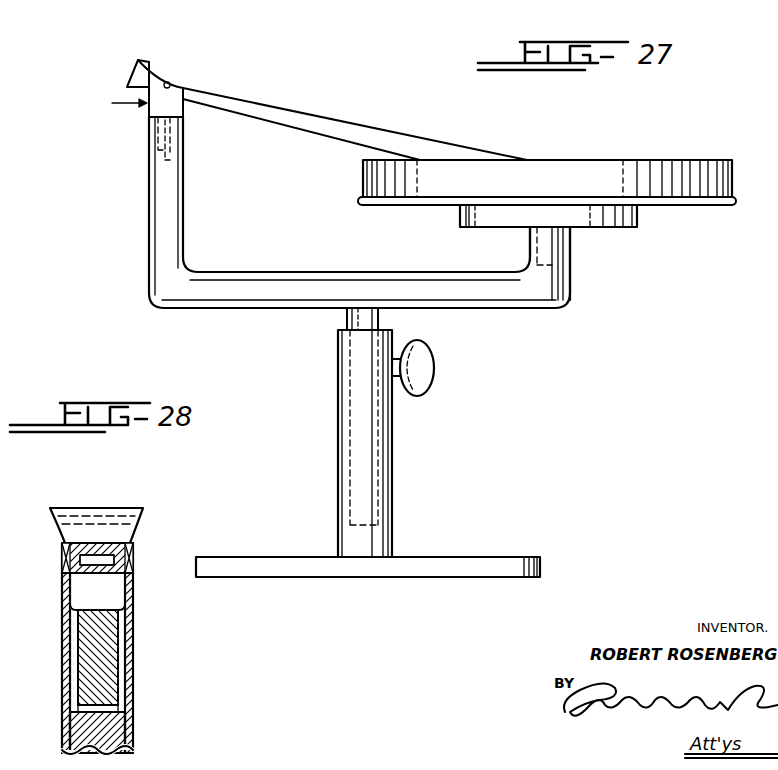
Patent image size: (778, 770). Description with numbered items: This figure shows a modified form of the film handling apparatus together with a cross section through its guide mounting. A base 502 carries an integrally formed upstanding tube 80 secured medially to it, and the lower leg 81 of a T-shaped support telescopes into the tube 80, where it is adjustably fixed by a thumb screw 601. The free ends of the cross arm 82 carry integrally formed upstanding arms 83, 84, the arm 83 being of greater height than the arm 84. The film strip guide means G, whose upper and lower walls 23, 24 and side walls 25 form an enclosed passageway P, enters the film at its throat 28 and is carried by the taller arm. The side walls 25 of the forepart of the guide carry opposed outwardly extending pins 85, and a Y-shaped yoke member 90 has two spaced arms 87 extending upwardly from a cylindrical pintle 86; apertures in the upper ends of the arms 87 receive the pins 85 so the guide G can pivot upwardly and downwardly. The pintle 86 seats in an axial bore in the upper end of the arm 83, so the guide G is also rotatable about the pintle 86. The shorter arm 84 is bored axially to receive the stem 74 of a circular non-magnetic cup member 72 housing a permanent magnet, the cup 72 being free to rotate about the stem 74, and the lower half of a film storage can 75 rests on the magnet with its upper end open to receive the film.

In FIG. 27, the throat 28 is at (128, 39).
In FIG. 27, the pins 85 is at (171, 83).
In FIG. 28, the pins 85 is at (66, 549).
In FIG. 27, the yoke member 90 is at (115, 105).
In FIG. 28, the yoke member 90 is at (138, 602).
In FIG. 27, the pintle 86 is at (162, 148).
In FIG. 28, the pintle 86 is at (100, 698).
In FIG. 27, the upstanding arm 83 is at (160, 192).
In FIG. 28, the upstanding arm 83 is at (62, 690).
In FIG. 27, the cross arm 82 is at (280, 287).
In FIG. 27, the lower leg 81 is at (347, 320).
In FIG. 27, the film storage can 75 is at (362, 176).
In FIG. 27, the cup member 72 is at (628, 228).
In FIG. 27, the stem 74 is at (548, 249).
In FIG. 27, the upstanding arm 84 is at (566, 250).
In FIG. 27, the thumb screw 601 is at (421, 368).
In FIG. 27, the tube 80 is at (393, 462).
In FIG. 27, the base 502 is at (497, 560).
In FIG. 27, the film strip guide means G is at (323, 118).
In FIG. 28, the film strip guide means G is at (112, 505).
In FIG. 28, the passageway P is at (96, 511).
In FIG. 28, the upper wall 23 is at (113, 546).
In FIG. 28, the side walls 25 is at (70, 582).
In FIG. 28, the arms 87 is at (63, 597).
In FIG. 28, the lower wall 24 is at (62, 612).